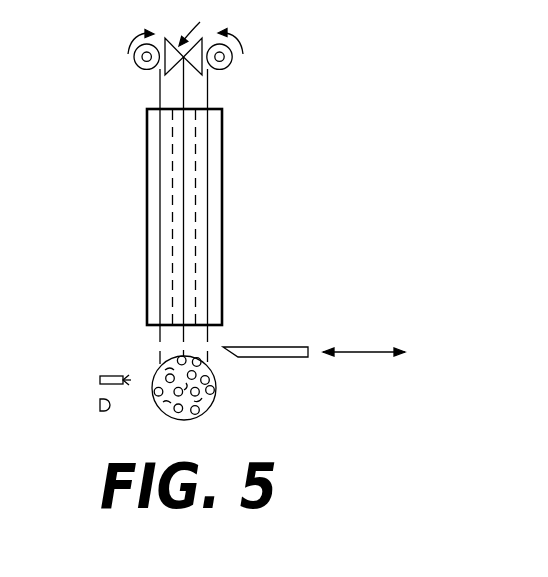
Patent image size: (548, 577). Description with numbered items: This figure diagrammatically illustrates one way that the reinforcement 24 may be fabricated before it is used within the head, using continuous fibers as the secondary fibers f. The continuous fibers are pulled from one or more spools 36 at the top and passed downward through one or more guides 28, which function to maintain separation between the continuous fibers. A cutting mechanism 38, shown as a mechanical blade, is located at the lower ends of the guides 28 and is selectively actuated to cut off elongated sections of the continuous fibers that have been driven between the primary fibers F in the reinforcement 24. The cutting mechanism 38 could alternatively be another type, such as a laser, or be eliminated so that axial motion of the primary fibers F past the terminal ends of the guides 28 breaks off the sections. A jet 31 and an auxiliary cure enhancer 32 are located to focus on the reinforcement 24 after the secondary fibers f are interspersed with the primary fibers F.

The spool 36 is at (232, 57).
The guide 28 is at (150, 176).
The cutting mechanism 38 is at (262, 350).
The reinforcement 24 is at (211, 410).
The secondary fibers f is at (210, 357).
The primary fibers F is at (157, 406).
The jet 31 is at (100, 380).
The auxiliary cure enhancer 32 is at (98, 404).